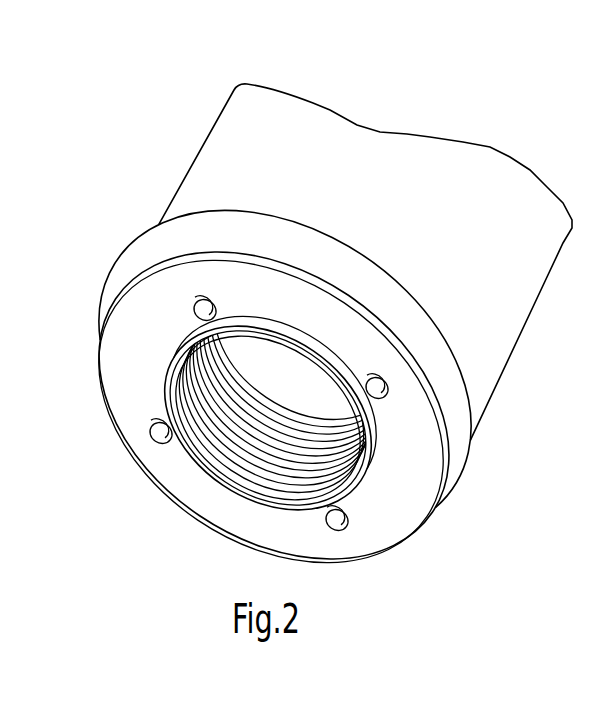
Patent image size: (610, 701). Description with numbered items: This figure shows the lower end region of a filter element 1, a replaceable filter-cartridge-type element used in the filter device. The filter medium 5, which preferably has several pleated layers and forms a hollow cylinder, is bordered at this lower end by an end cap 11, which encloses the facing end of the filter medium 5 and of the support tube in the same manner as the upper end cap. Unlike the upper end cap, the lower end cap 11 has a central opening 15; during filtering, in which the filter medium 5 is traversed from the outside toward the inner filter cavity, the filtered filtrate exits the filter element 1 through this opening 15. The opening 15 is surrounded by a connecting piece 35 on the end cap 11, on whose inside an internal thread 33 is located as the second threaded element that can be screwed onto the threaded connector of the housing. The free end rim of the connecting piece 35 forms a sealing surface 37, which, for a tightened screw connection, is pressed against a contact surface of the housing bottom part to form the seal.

The filter element 1 is at (147, 188).
The filter medium 5 is at (495, 278).
The end cap 11 is at (427, 470).
The central opening 15 is at (340, 507).
The internal thread 33 is at (237, 460).
The connecting piece 35 is at (357, 432).
The sealing surface 37 is at (342, 415).